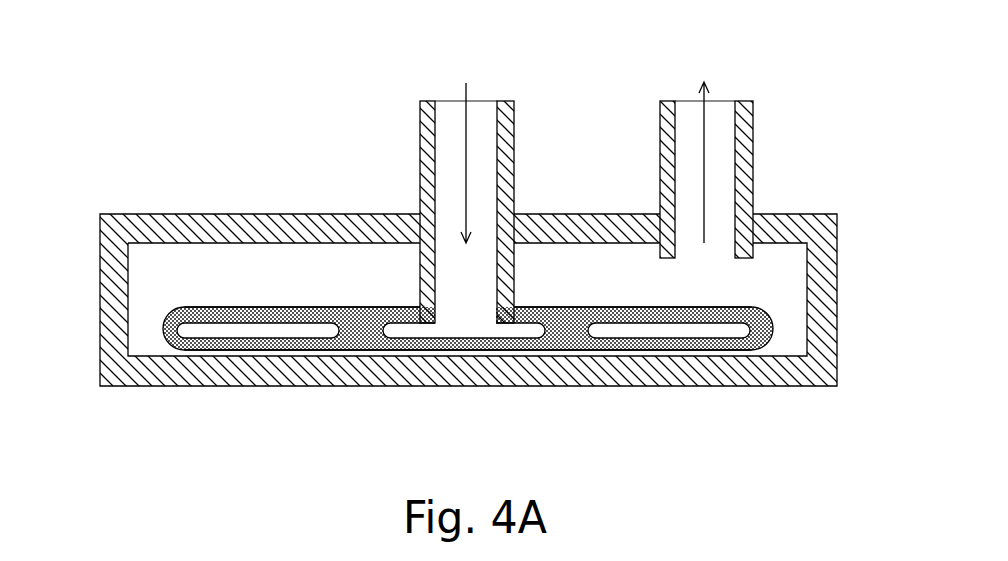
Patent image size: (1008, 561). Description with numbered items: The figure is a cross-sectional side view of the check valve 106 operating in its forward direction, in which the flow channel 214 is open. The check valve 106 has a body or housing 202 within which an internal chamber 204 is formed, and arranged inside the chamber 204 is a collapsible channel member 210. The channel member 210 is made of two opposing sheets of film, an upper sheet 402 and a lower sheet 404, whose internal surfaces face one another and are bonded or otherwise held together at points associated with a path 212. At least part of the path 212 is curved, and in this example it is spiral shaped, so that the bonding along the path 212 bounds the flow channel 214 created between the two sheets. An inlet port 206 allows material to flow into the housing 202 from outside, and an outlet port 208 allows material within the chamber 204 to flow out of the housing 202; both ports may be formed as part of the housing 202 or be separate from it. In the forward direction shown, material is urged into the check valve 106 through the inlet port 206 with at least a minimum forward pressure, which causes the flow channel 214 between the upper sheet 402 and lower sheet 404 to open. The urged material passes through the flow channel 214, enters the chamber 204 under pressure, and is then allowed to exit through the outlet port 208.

The check valve 106 is at (214, 50).
The housing 202 is at (705, 386).
The internal chamber 204 is at (768, 288).
The inlet port 206 is at (453, 109).
The outlet port 208 is at (712, 127).
The collapsible channel member 210 is at (395, 323).
The path 212 is at (356, 336).
The flow channel 214 is at (203, 334).
The upper sheet 402 is at (291, 314).
The lower sheet 404 is at (278, 346).